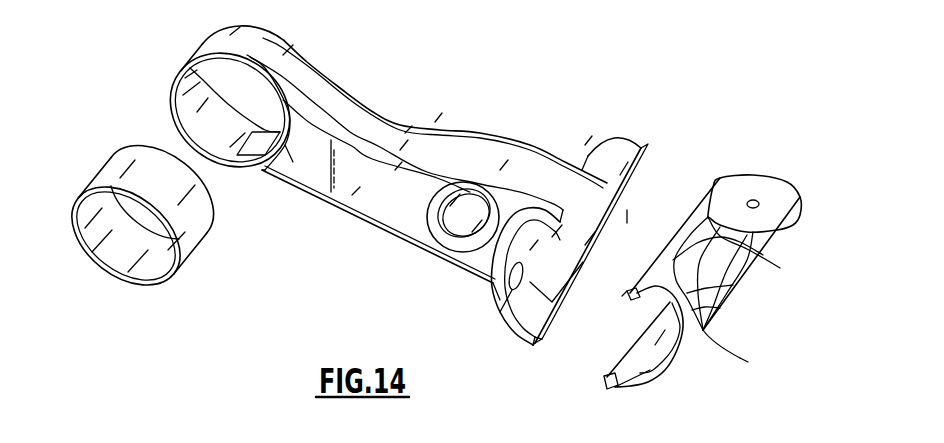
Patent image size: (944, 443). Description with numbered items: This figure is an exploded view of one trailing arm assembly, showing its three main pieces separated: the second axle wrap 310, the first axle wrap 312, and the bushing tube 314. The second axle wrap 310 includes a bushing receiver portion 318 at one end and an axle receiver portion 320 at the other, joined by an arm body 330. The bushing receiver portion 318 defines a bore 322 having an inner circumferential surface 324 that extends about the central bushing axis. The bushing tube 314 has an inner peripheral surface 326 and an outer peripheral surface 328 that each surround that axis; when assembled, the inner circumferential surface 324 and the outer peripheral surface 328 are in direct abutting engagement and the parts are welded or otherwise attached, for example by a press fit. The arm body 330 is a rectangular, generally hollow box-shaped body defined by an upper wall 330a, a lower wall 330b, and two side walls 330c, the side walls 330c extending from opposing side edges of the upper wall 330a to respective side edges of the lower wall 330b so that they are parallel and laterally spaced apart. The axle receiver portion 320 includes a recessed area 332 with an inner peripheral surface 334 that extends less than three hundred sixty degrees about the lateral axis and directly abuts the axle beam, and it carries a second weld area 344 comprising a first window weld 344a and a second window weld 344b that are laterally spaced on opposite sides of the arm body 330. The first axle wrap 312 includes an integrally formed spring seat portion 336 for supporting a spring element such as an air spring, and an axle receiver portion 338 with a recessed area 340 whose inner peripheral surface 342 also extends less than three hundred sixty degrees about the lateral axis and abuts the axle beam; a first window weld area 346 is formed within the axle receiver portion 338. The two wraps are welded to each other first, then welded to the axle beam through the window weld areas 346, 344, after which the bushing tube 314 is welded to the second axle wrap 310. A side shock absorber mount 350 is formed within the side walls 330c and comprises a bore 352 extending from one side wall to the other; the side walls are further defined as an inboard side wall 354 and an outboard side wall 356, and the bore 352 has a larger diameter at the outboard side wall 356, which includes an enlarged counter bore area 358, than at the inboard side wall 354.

The second axle wrap 310 is at (468, 273).
The first axle wrap 312 is at (707, 330).
The bushing tube 314 is at (80, 257).
The bushing receiver portion 318 is at (230, 37).
The axle receiver portion 320 is at (632, 234).
The bore 322 is at (223, 87).
The inner circumferential surface 324 is at (190, 107).
The inner peripheral surface 326 is at (128, 263).
The outer peripheral surface 328 is at (190, 233).
The arm body 330 is at (430, 143).
The upper wall 330a is at (333, 101).
The lower wall 330b is at (368, 222).
The side walls 330c is at (322, 68).
The recessed area 332 is at (648, 178).
The inner peripheral surface 334 is at (513, 330).
The spring seat portion 336 is at (773, 202).
The axle receiver portion 338 is at (642, 370).
The recessed area 340 is at (604, 348).
The inner peripheral surface 342 is at (665, 347).
The second weld area 344 is at (573, 148).
The first window weld 344a is at (588, 160).
The second window weld 344b is at (552, 323).
The first window weld area 346 is at (764, 287).
The side shock absorber mount 350 is at (414, 198).
The bore 352 is at (460, 210).
The inboard side wall 354 is at (413, 127).
The outboard side wall 356 is at (290, 168).
The enlarged counter bore area 358 is at (440, 222).